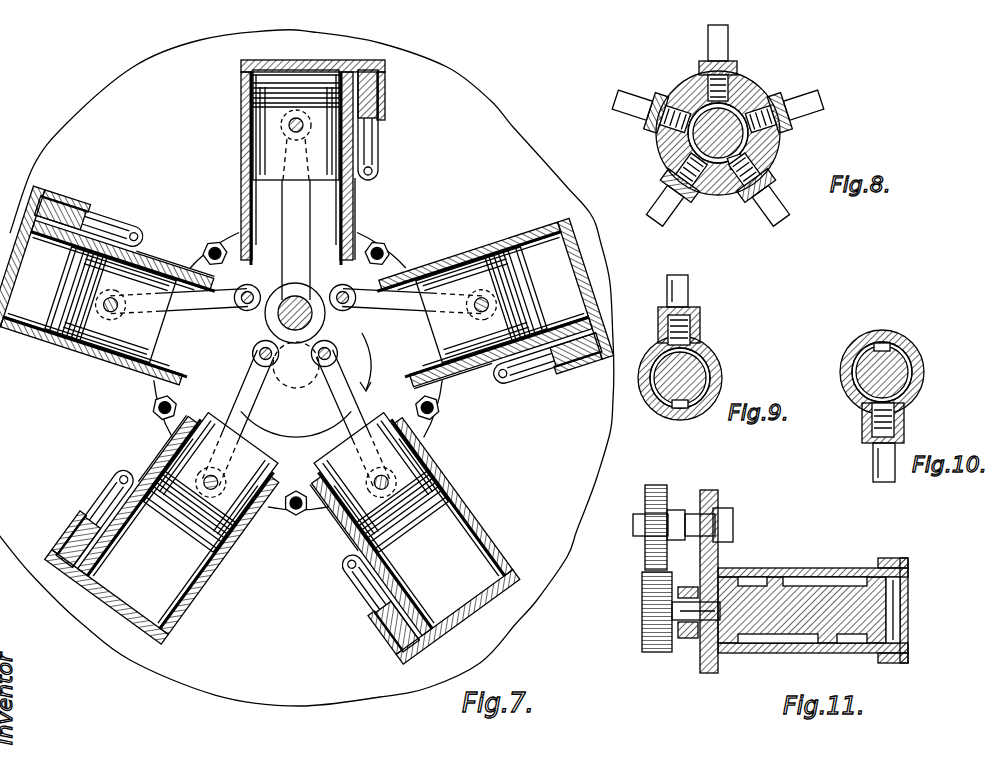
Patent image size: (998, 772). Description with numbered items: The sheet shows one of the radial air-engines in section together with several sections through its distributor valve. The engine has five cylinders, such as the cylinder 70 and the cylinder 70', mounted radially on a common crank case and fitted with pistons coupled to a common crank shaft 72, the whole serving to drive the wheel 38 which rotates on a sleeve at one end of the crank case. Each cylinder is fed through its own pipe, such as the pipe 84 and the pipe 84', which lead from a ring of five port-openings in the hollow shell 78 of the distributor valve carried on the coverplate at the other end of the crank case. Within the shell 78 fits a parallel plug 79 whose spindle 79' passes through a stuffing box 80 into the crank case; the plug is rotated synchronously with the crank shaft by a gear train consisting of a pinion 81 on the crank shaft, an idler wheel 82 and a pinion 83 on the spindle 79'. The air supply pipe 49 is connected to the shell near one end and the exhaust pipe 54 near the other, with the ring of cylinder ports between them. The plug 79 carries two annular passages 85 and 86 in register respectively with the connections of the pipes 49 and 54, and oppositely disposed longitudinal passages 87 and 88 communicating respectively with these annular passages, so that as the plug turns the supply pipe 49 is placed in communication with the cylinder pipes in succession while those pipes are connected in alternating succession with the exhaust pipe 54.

In FIG. 7, the wheel 38 is at (307, 368).
In FIG. 7, the cylinder 70 is at (472, 318).
In FIG. 7, the cylinder 70' is at (308, 162).
In FIG. 7, the crank shaft 72 is at (294, 297).
In FIG. 7, the pipe 84 is at (546, 372).
In FIG. 8, the pipe 84 is at (805, 112).
In FIG. 7, the pipe 84' is at (389, 125).
In FIG. 8, the pipe 84' is at (735, 63).
In FIG. 8, the shell of the distributor valve 78 is at (757, 88).
In FIG. 9, the shell of the distributor valve 78 is at (710, 350).
In FIG. 10, the shell of the distributor valve 78 is at (924, 380).
In FIG. 11, the shell of the distributor valve 78 is at (745, 653).
In FIG. 8, the plug 79 is at (750, 133).
In FIG. 9, the plug 79 is at (707, 378).
In FIG. 10, the plug 79 is at (903, 372).
In FIG. 11, the plug 79 is at (832, 610).
In FIG. 11, the spindle 79' is at (682, 648).
In FIG. 11, the stuffing box 80 is at (688, 587).
In FIG. 9, the pinion 81 is at (655, 378).
In FIG. 11, the idler wheel 82 is at (645, 495).
In FIG. 11, the pinion 83 is at (648, 622).
In FIG. 9, the annular passage 85 is at (690, 410).
In FIG. 11, the annular passage 85 is at (752, 576).
In FIG. 10, the annular passage 86 is at (858, 372).
In FIG. 11, the annular passage 86 is at (850, 644).
In FIG. 8, the longitudinal passage 87 is at (693, 143).
In FIG. 11, the longitudinal passage 87 is at (785, 644).
In FIG. 8, the longitudinal passage 88 is at (770, 108).
In FIG. 10, the longitudinal passage 88 is at (912, 398).
In FIG. 11, the longitudinal passage 88 is at (815, 576).
In FIG. 9, the air supply pipe 49 is at (680, 292).
In FIG. 10, the exhaust pipe 54 is at (872, 462).